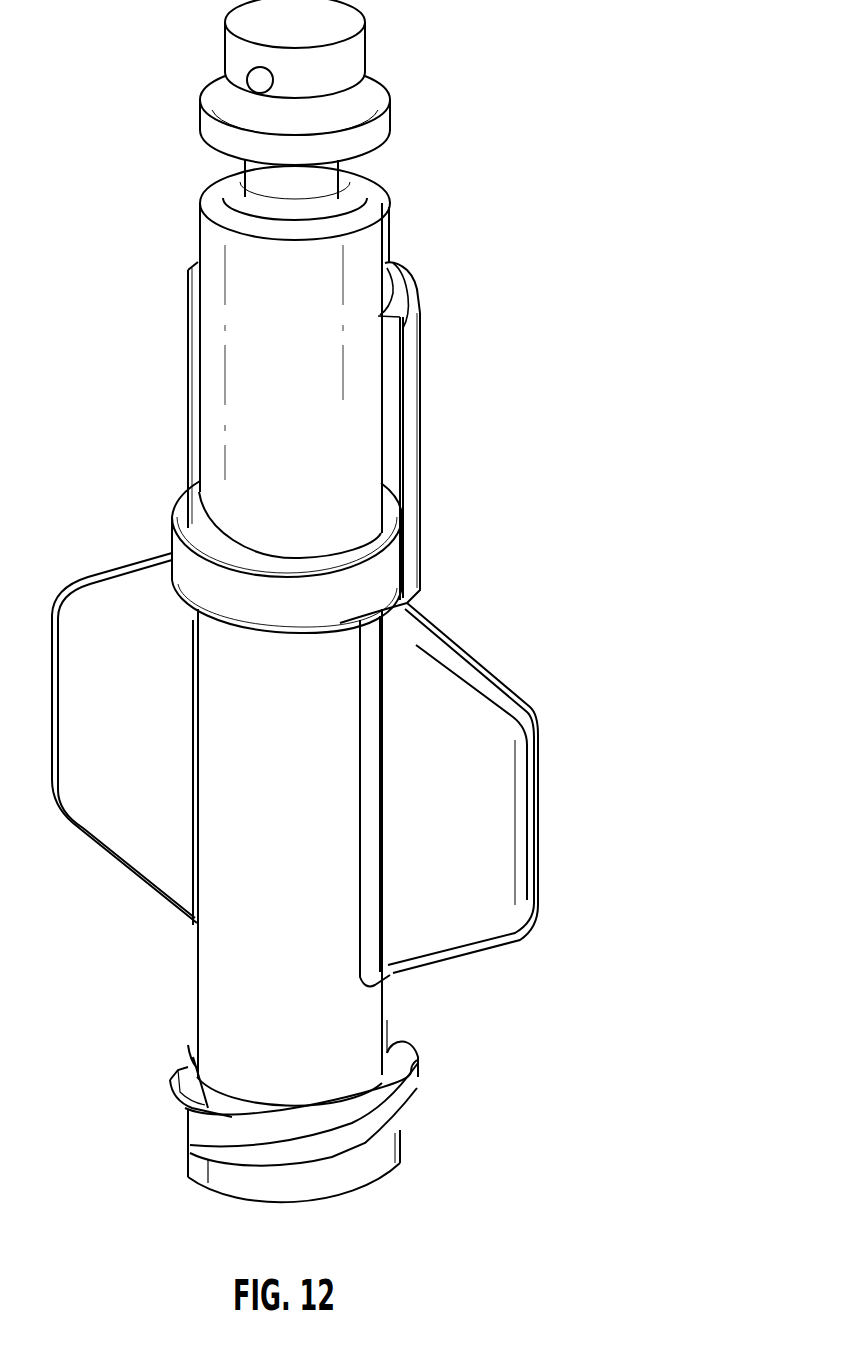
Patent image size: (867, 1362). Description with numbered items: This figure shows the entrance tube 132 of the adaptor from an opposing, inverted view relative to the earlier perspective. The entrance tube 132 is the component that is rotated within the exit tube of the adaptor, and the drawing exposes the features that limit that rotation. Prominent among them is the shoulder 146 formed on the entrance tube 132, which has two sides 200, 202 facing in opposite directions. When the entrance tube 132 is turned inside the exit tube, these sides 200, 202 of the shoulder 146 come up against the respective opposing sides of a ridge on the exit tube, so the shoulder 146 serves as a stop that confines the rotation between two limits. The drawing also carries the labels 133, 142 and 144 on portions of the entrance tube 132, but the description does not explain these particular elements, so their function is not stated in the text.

The entrance tube 132 is at (387, 601).
The tubular body 133 is at (257, 390).
The wings 142 is at (520, 813).
The collar 144 is at (372, 546).
The shoulder 146 is at (400, 288).
The side of shoulder 200 is at (197, 350).
The side of shoulder 202 is at (390, 430).